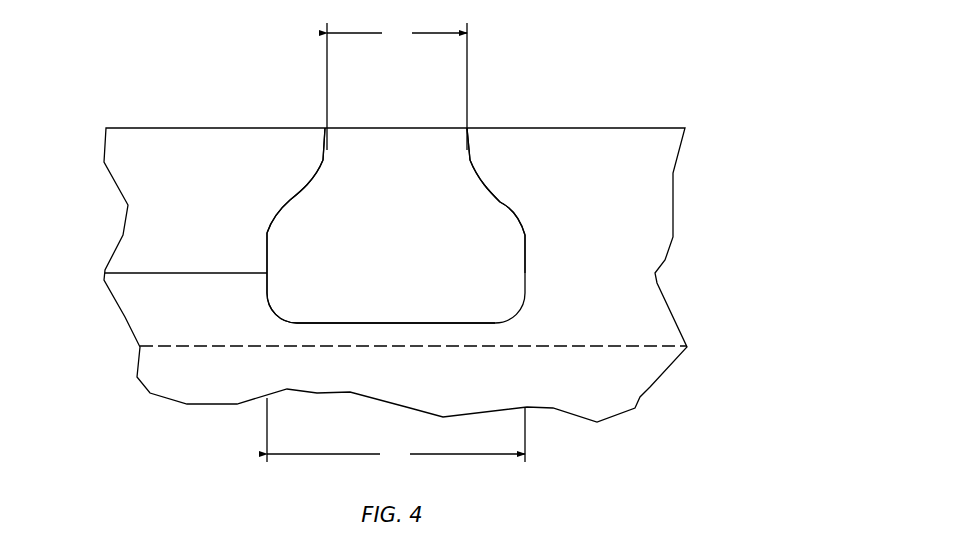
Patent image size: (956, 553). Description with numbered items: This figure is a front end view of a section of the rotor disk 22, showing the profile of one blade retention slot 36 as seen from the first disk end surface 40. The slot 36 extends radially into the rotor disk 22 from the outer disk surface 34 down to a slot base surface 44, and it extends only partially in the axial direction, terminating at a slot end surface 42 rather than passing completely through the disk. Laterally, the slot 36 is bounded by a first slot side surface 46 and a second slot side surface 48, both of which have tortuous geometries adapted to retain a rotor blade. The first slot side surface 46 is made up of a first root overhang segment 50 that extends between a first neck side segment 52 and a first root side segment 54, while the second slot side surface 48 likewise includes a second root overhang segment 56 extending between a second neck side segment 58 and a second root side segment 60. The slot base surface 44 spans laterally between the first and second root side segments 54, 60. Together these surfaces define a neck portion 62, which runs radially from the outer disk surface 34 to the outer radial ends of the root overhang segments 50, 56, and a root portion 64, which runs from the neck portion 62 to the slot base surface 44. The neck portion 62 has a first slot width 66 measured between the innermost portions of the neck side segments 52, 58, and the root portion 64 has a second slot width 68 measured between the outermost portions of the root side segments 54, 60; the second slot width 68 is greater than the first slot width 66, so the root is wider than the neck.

The rotor disk 22 is at (743, 160).
The outer disk surface 34 is at (640, 128).
The blade retention slot 36 is at (443, 170).
The first disk end surface 40 is at (147, 205).
The slot end surface 42 is at (272, 290).
The slot base surface 44 is at (461, 322).
The first slot side surface 46 is at (293, 198).
The second slot side surface 48 is at (503, 203).
The first root overhang segment 50 is at (280, 214).
The first neck side segment 52 is at (330, 146).
The first root side segment 54 is at (268, 248).
The second root overhang segment 56 is at (512, 216).
The second neck side segment 58 is at (472, 175).
The second root side segment 60 is at (523, 259).
The neck portion 62 is at (390, 167).
The root portion 64 is at (440, 243).
The first slot width 66 is at (397, 85).
The second slot width 68 is at (396, 432).